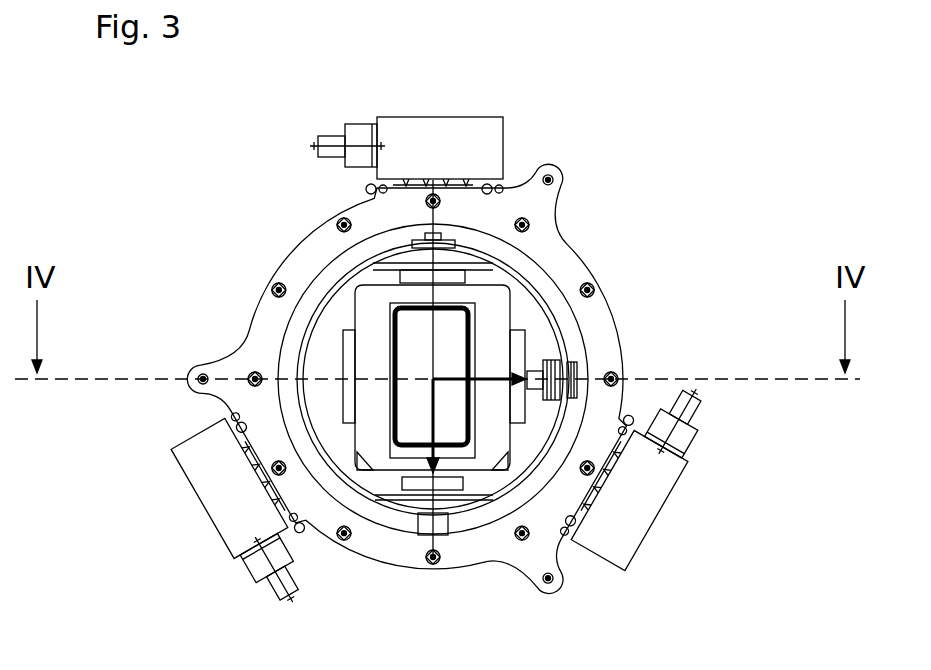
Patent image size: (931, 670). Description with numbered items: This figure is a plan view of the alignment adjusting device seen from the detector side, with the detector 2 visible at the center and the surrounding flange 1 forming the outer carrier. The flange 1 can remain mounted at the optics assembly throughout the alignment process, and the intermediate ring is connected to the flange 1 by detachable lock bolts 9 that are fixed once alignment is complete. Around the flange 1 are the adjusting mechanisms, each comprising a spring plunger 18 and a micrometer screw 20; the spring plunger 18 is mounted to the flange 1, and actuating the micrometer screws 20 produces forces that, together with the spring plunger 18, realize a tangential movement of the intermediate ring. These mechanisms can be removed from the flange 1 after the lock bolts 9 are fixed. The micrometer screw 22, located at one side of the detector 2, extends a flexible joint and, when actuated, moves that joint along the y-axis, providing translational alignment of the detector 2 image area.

The flange 1 is at (590, 335).
The detector 2 is at (442, 352).
The lock bolts 9 is at (433, 565).
The spring plunger 18 is at (510, 145).
The micrometer screw 20 is at (337, 133).
The micrometer screw 22 is at (577, 365).